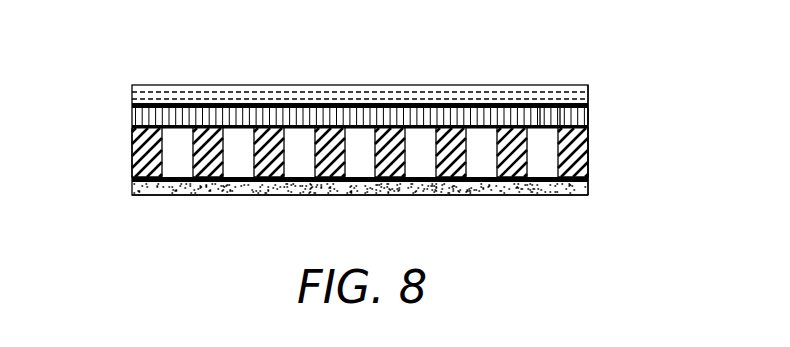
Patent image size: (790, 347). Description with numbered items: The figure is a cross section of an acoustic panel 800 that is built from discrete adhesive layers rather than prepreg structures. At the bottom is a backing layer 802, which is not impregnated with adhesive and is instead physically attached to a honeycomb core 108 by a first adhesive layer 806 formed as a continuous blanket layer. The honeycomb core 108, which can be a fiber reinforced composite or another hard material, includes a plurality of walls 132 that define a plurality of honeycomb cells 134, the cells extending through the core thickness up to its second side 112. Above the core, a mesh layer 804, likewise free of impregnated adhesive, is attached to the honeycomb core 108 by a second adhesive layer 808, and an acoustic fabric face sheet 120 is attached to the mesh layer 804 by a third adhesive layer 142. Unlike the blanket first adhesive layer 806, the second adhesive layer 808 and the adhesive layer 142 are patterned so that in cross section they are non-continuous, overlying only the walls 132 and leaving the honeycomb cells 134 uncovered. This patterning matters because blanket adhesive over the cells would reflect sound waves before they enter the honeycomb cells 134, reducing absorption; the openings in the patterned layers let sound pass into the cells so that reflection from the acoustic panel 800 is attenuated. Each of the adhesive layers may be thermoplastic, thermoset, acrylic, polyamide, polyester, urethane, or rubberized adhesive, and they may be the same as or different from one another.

The acoustic panel 800 is at (132, 59).
The acoustic fabric face sheet 120 is at (475, 97).
The adhesive layer 142 is at (132, 106).
The second adhesive layer 808 is at (133, 124).
The mesh layer 804 is at (588, 117).
The second side 112 is at (400, 155).
The honeycomb core 108 is at (595, 147).
The first adhesive layer 806 is at (588, 181).
The backing layer 802 is at (555, 196).
The walls 132 is at (268, 178).
The honeycomb cells 134 is at (538, 170).